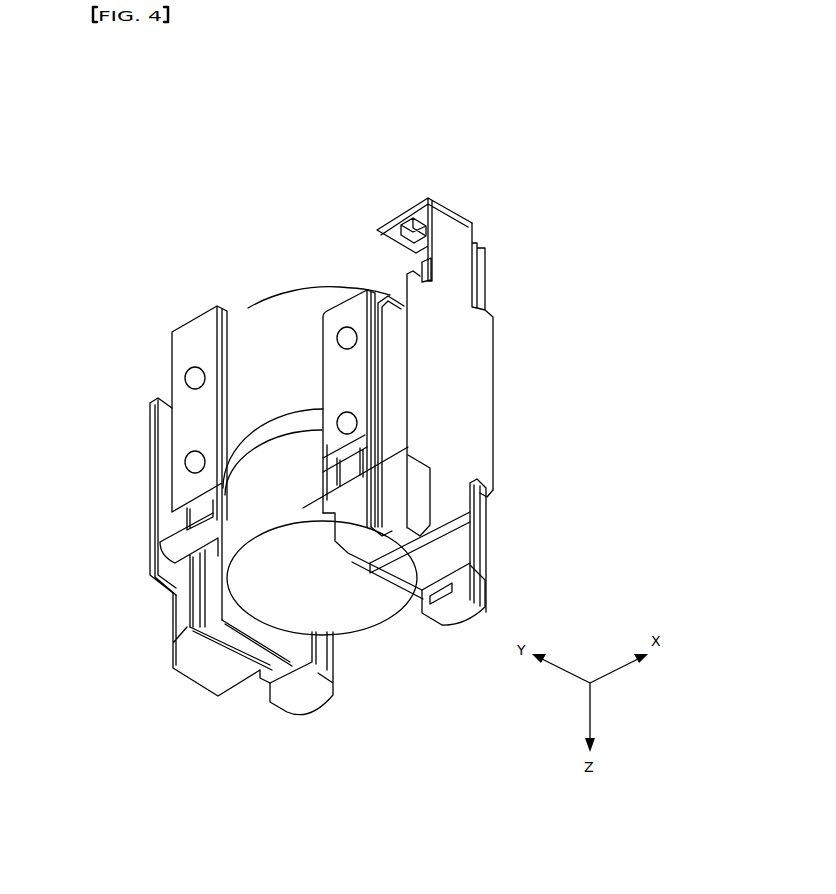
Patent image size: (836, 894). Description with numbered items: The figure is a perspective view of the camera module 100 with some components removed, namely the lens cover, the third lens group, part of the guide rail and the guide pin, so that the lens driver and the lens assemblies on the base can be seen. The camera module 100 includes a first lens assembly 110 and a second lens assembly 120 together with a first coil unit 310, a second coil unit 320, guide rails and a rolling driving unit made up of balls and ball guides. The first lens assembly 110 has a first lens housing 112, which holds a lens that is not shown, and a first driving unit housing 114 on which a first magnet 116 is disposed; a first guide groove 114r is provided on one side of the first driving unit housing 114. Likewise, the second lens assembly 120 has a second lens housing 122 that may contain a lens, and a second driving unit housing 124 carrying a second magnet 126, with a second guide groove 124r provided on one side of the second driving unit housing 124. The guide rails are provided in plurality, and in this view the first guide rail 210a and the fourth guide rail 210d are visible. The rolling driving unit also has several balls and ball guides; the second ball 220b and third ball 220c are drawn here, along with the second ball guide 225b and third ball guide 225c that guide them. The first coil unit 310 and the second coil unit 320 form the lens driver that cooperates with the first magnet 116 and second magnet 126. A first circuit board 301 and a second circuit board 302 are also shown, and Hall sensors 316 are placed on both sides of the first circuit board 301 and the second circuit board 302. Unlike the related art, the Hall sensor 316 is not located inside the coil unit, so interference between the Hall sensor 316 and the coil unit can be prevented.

The camera module 100 is at (175, 137).
The first lens assembly 110 is at (583, 533).
The first lens housing 112 is at (387, 472).
The first driving unit housing 114 is at (380, 528).
The first guide groove 114r is at (390, 443).
The first magnet 116 is at (410, 505).
The second lens assembly 120 is at (52, 460).
The second lens housing 122 is at (248, 418).
The second driving unit housing 124 is at (173, 566).
The second guide groove 124r is at (190, 493).
The second magnet 126 is at (173, 598).
The first guide rail 210a is at (297, 703).
The fourth guide rail 210d is at (453, 613).
The second ball 220b is at (174, 376).
The third ball 220c is at (345, 319).
The second ball guide 225b is at (226, 392).
The third ball guide 225c is at (329, 309).
The first circuit board 301 is at (443, 557).
The second circuit board 302 is at (203, 673).
The first coil unit 310 is at (405, 372).
The Hall sensor 316 is at (398, 223).
The second coil unit 320 is at (167, 433).